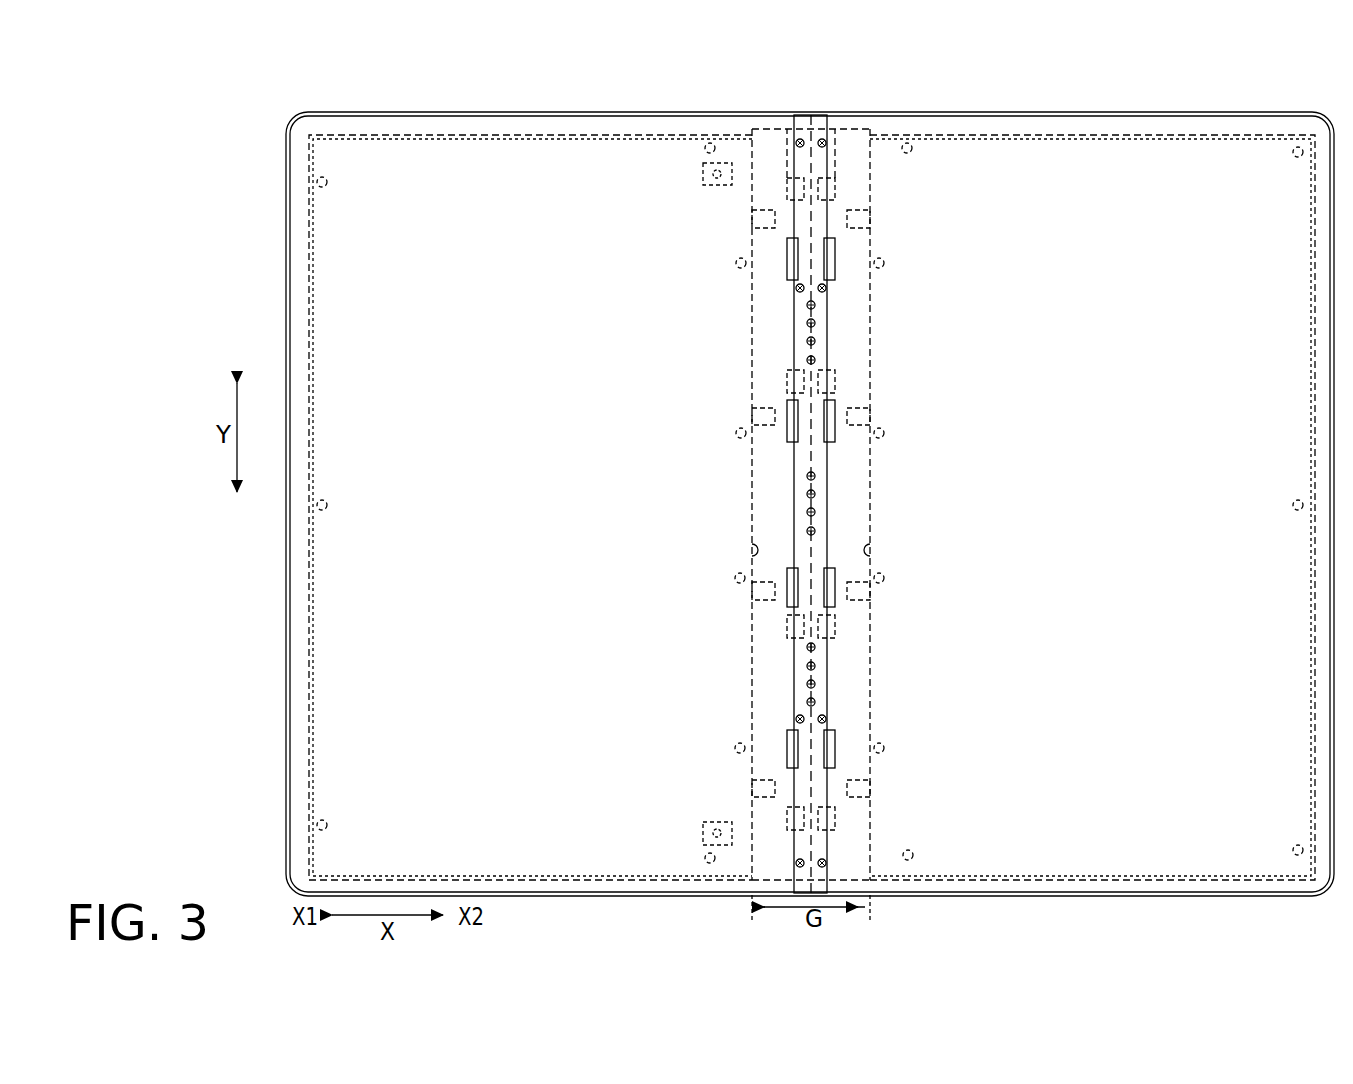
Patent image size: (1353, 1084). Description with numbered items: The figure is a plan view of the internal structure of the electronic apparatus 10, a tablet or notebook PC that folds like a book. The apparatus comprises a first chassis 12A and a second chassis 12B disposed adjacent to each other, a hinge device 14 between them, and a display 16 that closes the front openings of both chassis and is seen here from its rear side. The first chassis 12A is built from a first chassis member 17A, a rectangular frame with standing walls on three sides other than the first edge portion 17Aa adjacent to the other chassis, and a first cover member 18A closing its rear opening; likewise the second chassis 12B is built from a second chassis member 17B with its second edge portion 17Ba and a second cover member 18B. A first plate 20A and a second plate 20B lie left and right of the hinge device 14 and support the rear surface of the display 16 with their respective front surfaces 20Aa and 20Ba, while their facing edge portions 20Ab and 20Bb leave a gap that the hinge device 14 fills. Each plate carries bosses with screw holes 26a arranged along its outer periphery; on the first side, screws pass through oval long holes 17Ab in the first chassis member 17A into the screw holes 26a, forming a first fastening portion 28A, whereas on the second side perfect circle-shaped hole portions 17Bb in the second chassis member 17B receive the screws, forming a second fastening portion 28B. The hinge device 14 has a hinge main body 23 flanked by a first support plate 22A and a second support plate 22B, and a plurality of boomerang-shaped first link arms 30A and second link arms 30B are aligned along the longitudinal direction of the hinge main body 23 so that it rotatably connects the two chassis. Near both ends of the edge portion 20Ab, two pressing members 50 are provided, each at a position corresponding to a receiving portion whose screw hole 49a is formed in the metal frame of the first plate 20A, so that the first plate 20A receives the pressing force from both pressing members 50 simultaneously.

The electronic apparatus 10 is at (773, 473).
The first chassis 12A is at (444, 101).
The second chassis 12B is at (1148, 100).
The hinge device 14 is at (864, 341).
The display 16 is at (1241, 133).
The first chassis member 17A is at (549, 110).
The second chassis member 17B is at (1072, 109).
The first edge portion 17Aa is at (813, 463).
The second edge portion 17Ba is at (803, 457).
The long hole 17Ab is at (530, 507).
The hole portion 17Bb is at (1092, 507).
The first cover member 18A is at (612, 165).
The second cover member 18B is at (1005, 162).
The first plate 20A is at (557, 889).
The front surface of first plate 20Aa is at (568, 848).
The second plate 20B is at (1054, 889).
The front surface of second plate 20Ba is at (1052, 848).
The edge portion of first plate 20Ab is at (752, 550).
The edge portion of second plate 20Bb is at (868, 550).
The first support plate 22A is at (765, 663).
The second support plate 22B is at (865, 663).
The hinge main body 23 is at (800, 323).
The screw hole 26a is at (328, 183).
The first fastening portion 28A is at (530, 507).
The second fastening portion 28B is at (1092, 507).
The first link arm 30A is at (790, 242).
The second link arm 30B is at (832, 242).
The screw hole of second receiving portion 49a is at (716, 186).
The pressing member 50 is at (701, 172).